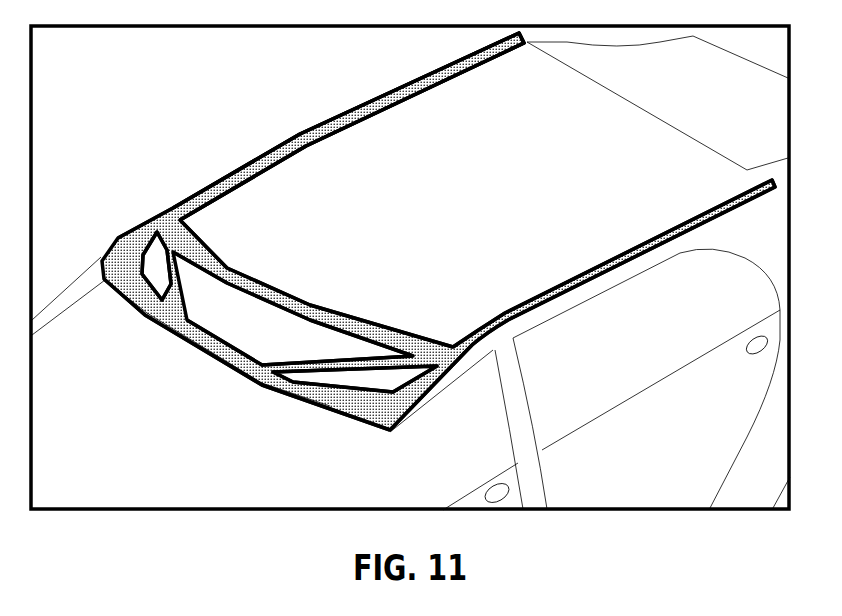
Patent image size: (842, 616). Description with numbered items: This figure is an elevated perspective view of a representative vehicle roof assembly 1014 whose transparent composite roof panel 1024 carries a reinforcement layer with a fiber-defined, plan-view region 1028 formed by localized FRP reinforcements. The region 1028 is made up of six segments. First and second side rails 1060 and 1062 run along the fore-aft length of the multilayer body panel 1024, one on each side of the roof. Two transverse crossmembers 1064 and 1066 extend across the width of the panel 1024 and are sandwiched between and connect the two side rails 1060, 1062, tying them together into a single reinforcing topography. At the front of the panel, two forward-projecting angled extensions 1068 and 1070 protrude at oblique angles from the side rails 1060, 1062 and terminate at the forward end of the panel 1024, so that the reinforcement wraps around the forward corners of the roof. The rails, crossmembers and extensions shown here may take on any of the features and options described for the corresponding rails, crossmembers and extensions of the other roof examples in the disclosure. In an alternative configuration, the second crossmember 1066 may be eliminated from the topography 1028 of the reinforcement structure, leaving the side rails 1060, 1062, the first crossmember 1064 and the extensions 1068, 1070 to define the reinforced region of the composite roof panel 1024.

The vehicle 1014 is at (178, 118).
The fiber-defined plan-view region 1028 is at (288, 116).
The composite roof panel 1024 is at (208, 362).
The second side rail 1062 is at (368, 102).
The first side rail 1060 is at (627, 257).
The second crossmember 1066 is at (220, 268).
The forward-projecting angled extension 1068 is at (177, 278).
The first crossmember 1064 is at (303, 395).
The forward-projecting angled extension 1070 is at (378, 407).